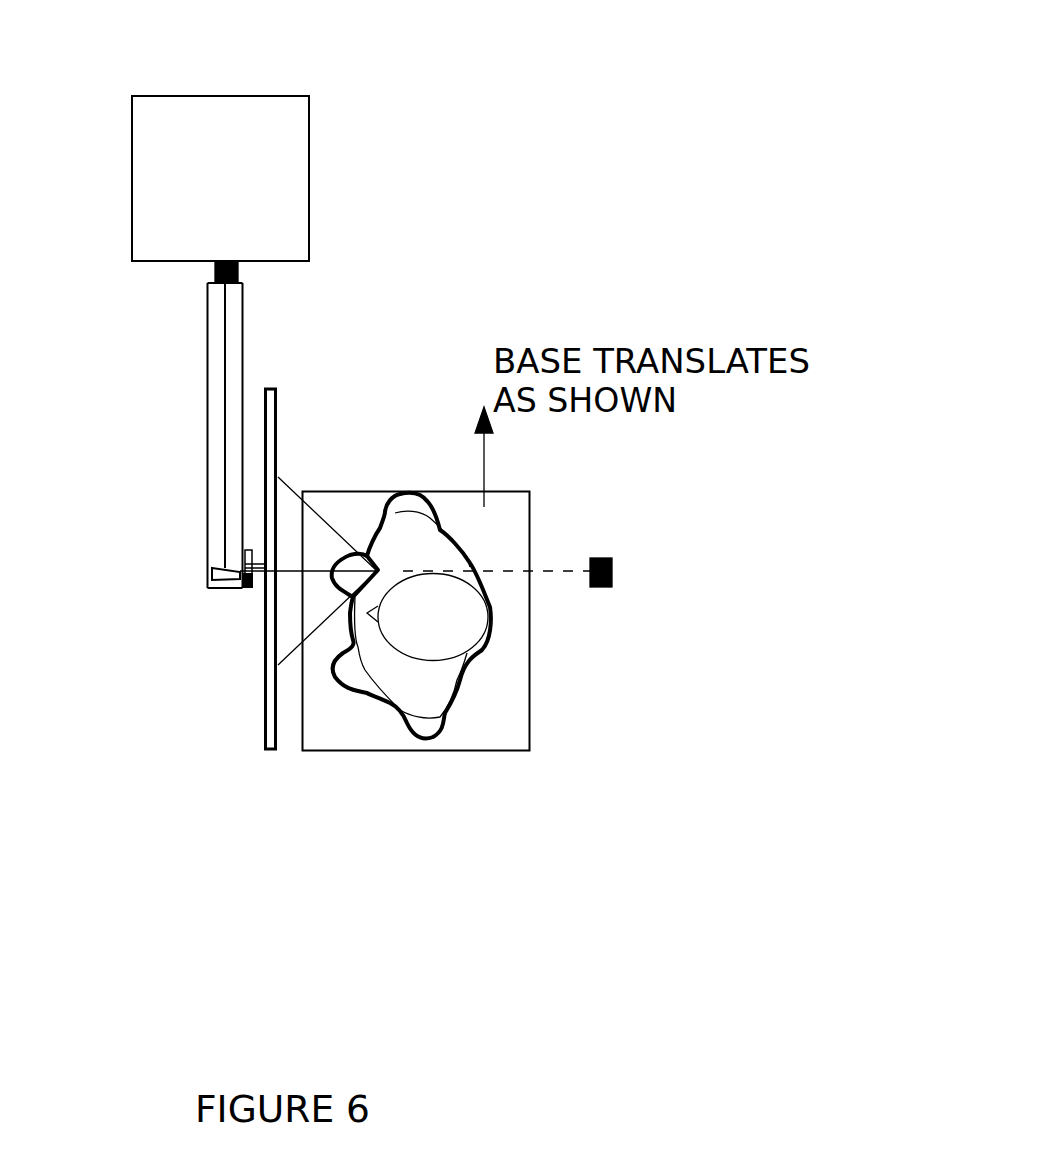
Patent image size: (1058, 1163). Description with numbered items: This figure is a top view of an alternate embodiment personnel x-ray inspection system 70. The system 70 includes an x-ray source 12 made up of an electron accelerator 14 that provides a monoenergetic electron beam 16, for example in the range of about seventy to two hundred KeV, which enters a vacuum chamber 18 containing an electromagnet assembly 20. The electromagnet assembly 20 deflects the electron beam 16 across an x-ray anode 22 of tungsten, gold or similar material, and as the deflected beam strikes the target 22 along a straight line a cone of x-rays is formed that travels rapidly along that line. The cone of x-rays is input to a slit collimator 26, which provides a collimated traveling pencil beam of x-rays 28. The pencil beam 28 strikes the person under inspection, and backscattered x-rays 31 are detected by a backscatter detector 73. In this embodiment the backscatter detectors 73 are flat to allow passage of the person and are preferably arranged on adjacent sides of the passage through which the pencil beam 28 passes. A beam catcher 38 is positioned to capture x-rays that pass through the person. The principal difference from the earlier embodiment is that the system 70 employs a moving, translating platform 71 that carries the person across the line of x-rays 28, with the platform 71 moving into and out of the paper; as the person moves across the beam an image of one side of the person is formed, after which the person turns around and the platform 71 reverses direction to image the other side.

The x-ray source 12 is at (343, 115).
The electron accelerator 14 is at (310, 197).
The electron beam 16 is at (226, 386).
The vacuum chamber 18 is at (257, 287).
The electromagnet assembly 20 is at (215, 269).
The x-ray anode 22 is at (212, 588).
The slit collimator 26 is at (252, 590).
The pencil beam of x-rays 28 is at (313, 570).
The backscattered x-rays 31 is at (283, 502).
The beam catcher 38 is at (612, 580).
The personnel x-ray inspection system 70 is at (608, 115).
The platform 71 is at (477, 737).
The backscatter detector 73 is at (277, 402).